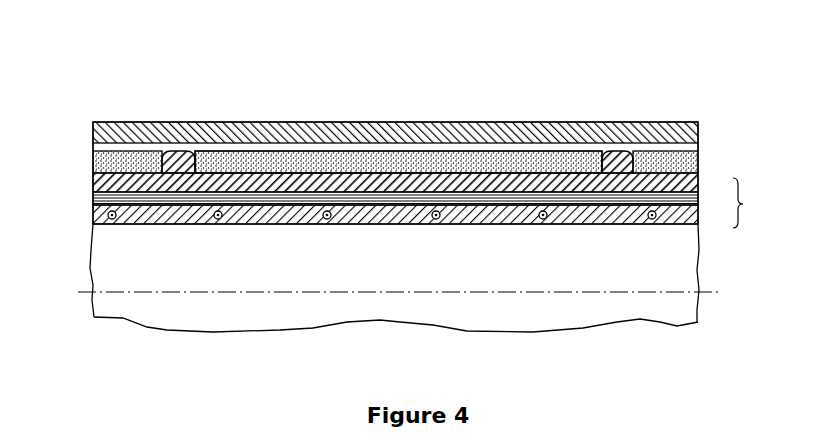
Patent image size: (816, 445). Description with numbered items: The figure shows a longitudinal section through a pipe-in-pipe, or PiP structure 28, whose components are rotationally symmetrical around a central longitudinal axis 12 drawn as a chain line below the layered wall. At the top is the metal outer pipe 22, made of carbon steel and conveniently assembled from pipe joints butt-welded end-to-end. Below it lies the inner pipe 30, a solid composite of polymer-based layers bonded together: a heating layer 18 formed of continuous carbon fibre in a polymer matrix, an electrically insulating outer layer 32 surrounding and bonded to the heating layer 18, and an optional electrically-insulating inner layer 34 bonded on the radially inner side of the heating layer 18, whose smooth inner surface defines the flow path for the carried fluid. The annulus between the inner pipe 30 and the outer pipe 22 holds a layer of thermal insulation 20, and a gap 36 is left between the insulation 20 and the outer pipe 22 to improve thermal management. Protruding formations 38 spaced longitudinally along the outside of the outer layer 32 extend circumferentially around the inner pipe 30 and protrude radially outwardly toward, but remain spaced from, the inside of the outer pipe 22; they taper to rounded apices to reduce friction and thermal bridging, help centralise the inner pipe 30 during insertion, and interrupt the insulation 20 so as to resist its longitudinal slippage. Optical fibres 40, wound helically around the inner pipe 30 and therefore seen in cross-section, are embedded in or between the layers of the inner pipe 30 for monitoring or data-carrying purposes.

The central longitudinal axis 12 is at (573, 290).
The heating layer 18 is at (295, 224).
The layer of thermal insulation 20 is at (118, 165).
The metal outer pipe 22 is at (433, 125).
The PiP structure 28 is at (330, 79).
The inner pipe 30 is at (754, 203).
The electrically insulating outer layer 32 is at (98, 185).
The electrically-insulating inner layer 34 is at (167, 224).
The gap 36 is at (540, 150).
The protruding formations 38 is at (180, 158).
The optical fibres 40 is at (430, 223).